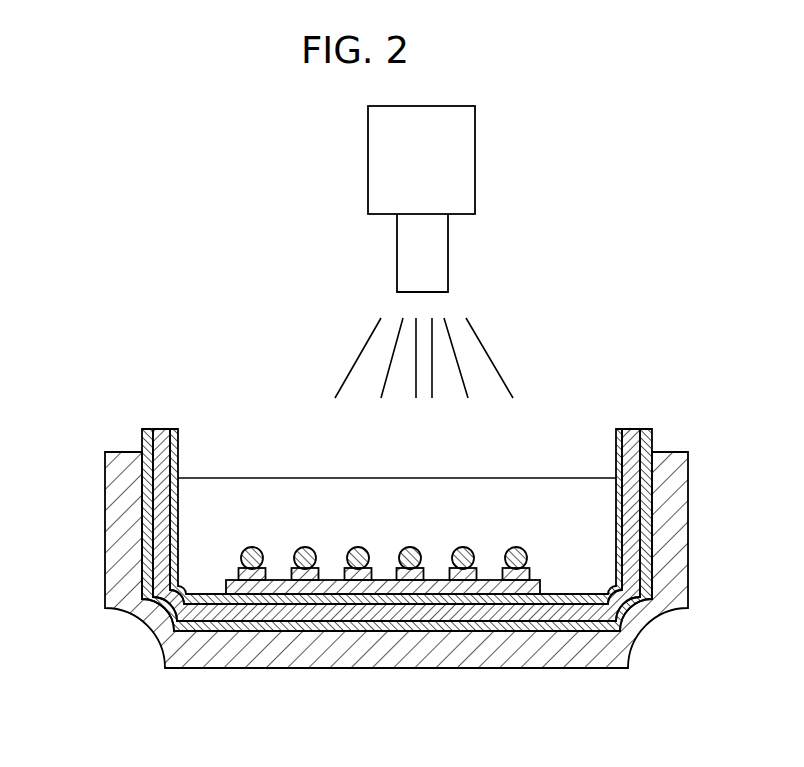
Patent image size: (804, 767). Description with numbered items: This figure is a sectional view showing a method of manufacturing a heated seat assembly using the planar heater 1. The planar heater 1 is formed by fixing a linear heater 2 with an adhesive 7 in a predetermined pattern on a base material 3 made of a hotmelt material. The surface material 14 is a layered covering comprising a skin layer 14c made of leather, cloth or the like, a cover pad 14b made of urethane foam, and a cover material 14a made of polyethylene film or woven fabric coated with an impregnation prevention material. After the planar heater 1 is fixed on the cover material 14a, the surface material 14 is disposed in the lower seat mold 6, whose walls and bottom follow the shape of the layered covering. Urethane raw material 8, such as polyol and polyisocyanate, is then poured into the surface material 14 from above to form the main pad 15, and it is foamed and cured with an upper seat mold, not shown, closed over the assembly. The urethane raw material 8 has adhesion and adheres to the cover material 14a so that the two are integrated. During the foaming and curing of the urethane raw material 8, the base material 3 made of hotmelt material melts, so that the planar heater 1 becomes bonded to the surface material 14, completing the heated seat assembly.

The planar heater 1 is at (493, 594).
The linear heater 2 is at (527, 556).
The base material 3 is at (592, 607).
The lower seat mold 6 is at (312, 660).
The adhesive 7 is at (540, 578).
The urethane raw material 8 is at (490, 357).
The surface material 14 is at (340, 457).
The cover material 14a is at (176, 433).
The cover pad 14b is at (160, 433).
The skin layer 14c is at (147, 433).
The main pad 15 is at (535, 482).